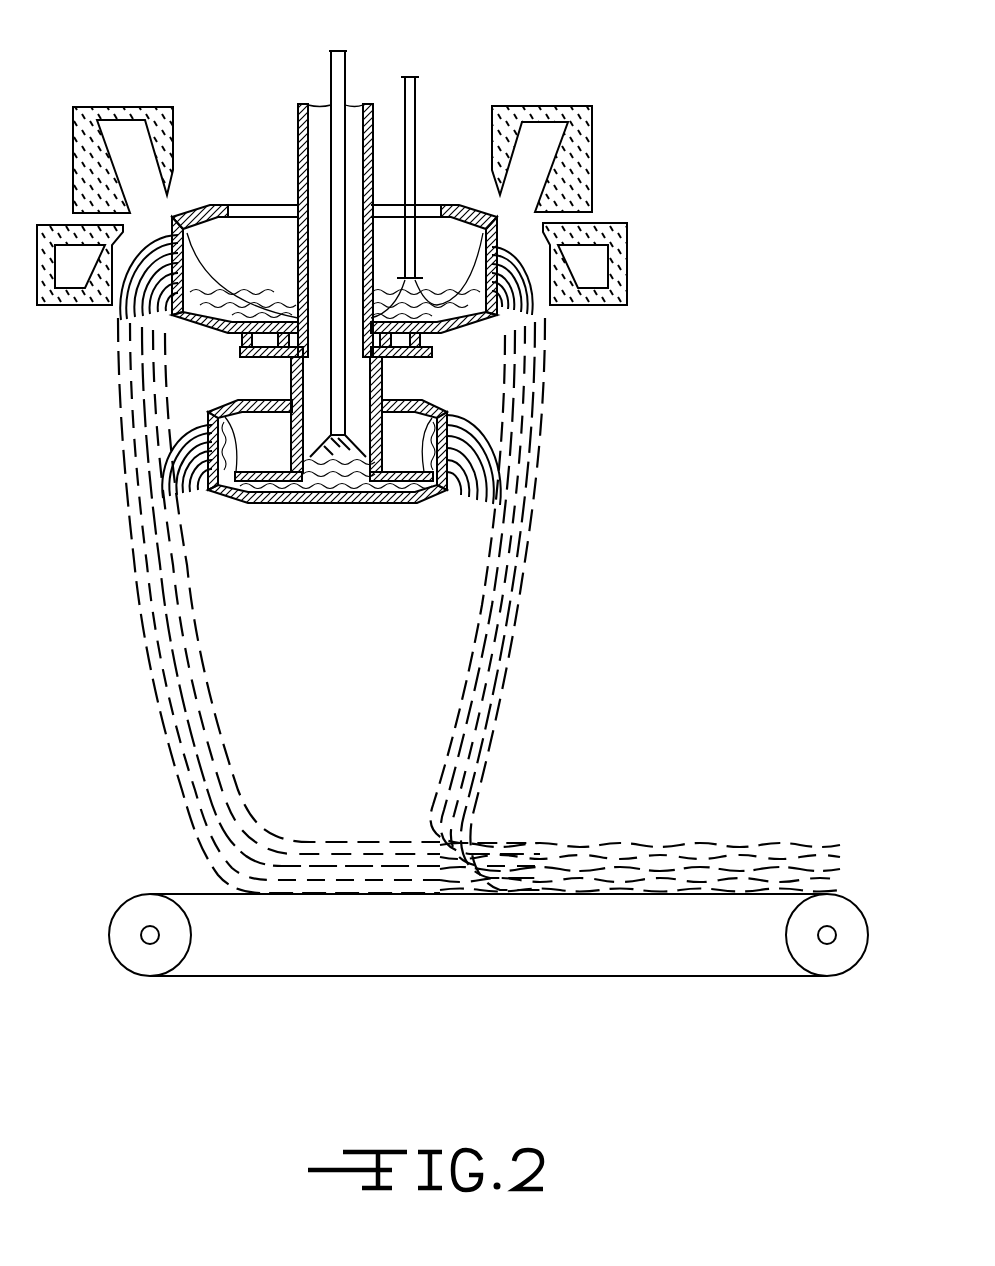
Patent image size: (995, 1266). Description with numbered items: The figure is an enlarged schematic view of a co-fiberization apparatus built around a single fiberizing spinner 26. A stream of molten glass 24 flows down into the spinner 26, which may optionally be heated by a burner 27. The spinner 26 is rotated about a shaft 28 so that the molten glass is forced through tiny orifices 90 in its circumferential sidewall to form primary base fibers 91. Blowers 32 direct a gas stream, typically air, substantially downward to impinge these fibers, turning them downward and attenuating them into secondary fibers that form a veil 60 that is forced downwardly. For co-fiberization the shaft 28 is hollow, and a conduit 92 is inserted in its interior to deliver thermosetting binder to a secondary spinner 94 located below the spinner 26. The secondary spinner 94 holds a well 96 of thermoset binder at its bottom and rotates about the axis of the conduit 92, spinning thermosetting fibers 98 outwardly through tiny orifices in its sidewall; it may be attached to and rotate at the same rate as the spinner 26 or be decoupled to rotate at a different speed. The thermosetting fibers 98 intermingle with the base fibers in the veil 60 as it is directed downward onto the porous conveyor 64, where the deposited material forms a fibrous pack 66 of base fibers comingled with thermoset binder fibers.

The stream of molten glass 24 is at (418, 115).
The spinner 26 is at (200, 332).
The burner 27 is at (556, 106).
The shaft 28 is at (298, 135).
The blowers 32 is at (630, 262).
The veil 60 is at (548, 388).
The porous conveyor 64 is at (188, 893).
The fibrous pack 66 is at (622, 842).
The orifices 90 is at (183, 262).
The primary base fibers 91 is at (522, 255).
The conduit 92 is at (331, 73).
The secondary spinner 94 is at (220, 497).
The well 96 is at (388, 482).
The thermosetting fibers 98 is at (488, 440).